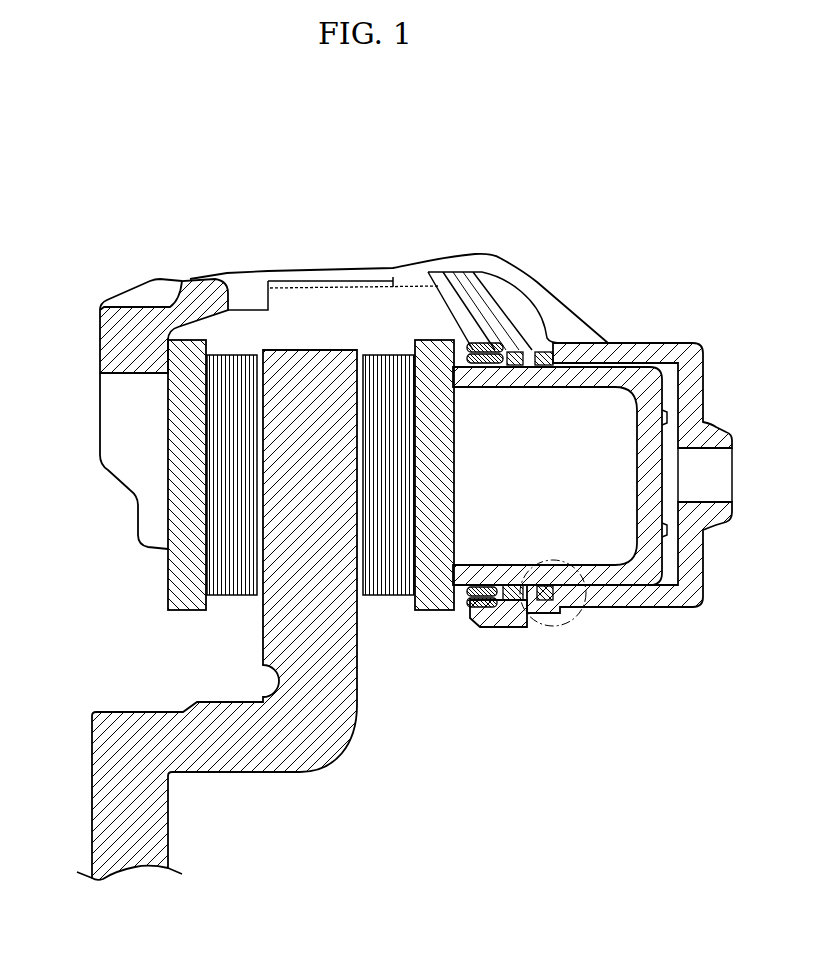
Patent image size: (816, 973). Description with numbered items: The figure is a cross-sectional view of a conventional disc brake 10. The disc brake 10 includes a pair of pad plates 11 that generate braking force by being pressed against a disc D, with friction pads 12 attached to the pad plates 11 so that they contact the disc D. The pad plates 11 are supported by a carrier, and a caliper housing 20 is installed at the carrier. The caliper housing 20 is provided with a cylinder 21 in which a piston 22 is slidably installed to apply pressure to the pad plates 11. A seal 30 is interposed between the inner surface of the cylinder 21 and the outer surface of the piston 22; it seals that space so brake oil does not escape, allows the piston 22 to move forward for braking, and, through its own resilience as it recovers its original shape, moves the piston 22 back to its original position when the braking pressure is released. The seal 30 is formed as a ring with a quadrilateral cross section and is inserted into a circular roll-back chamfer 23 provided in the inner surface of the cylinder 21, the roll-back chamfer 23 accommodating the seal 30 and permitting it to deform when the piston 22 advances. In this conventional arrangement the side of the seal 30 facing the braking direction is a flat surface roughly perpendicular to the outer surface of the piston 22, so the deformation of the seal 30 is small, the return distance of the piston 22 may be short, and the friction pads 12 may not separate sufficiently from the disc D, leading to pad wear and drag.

The disc brake 10 is at (404, 514).
The pad plates 11 is at (187, 612).
The friction pads 12 is at (235, 580).
The caliper housing 20 is at (535, 278).
The cylinder 21 is at (675, 593).
The piston 22 is at (617, 587).
The roll-back chamfer 23 is at (566, 350).
The seal 30 is at (560, 603).
The disc D is at (255, 748).